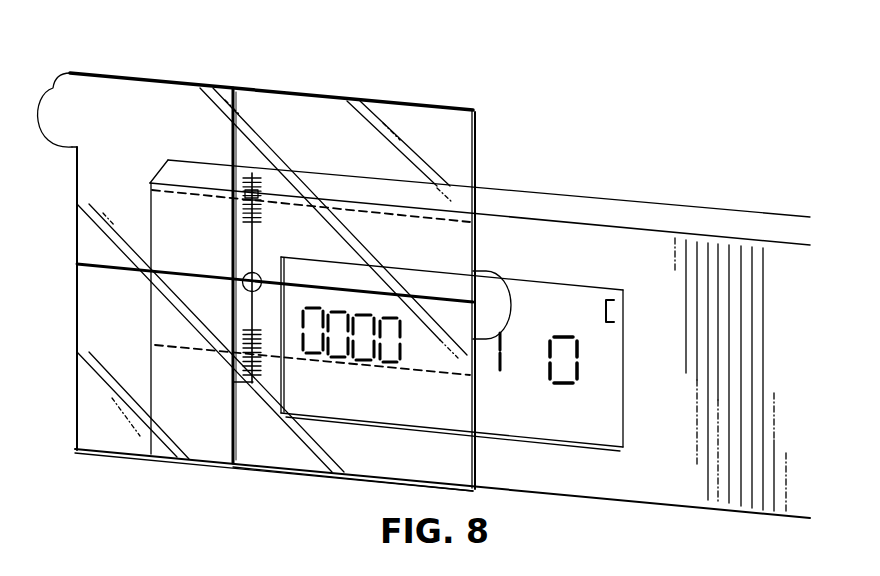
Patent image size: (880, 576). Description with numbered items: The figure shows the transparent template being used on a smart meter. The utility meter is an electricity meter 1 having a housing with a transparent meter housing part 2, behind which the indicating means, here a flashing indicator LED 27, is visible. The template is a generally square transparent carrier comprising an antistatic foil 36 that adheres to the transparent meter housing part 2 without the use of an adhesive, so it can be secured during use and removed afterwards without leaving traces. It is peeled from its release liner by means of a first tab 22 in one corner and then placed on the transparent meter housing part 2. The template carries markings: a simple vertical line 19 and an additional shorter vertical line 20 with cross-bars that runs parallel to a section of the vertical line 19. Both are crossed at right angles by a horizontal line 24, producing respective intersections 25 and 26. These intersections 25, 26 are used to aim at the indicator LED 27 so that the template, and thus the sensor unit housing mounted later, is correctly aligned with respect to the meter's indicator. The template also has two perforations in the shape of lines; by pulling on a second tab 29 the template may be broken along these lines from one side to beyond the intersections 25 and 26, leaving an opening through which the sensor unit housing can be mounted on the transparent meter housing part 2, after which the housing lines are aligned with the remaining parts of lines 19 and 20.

The electricity meter 1 is at (57, 119).
The transparent meter housing part 2 is at (586, 223).
The vertical line 19 is at (233, 124).
The additional shorter vertical line 20 is at (252, 317).
The first tab 22 is at (53, 88).
The horizontal line 24 is at (362, 291).
The intersection 25 is at (243, 278).
The intersection 26 is at (258, 277).
The flashing indicator LED 27 is at (245, 288).
The second tab 29 is at (500, 298).
The antistatic foil 36 is at (360, 157).